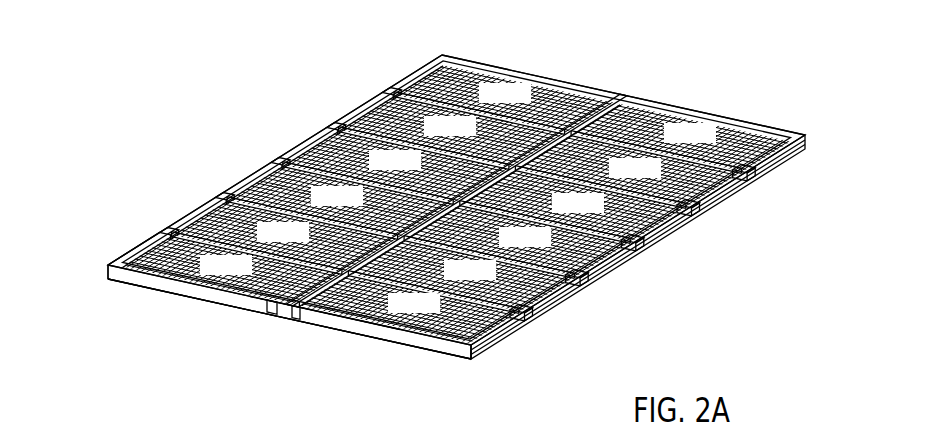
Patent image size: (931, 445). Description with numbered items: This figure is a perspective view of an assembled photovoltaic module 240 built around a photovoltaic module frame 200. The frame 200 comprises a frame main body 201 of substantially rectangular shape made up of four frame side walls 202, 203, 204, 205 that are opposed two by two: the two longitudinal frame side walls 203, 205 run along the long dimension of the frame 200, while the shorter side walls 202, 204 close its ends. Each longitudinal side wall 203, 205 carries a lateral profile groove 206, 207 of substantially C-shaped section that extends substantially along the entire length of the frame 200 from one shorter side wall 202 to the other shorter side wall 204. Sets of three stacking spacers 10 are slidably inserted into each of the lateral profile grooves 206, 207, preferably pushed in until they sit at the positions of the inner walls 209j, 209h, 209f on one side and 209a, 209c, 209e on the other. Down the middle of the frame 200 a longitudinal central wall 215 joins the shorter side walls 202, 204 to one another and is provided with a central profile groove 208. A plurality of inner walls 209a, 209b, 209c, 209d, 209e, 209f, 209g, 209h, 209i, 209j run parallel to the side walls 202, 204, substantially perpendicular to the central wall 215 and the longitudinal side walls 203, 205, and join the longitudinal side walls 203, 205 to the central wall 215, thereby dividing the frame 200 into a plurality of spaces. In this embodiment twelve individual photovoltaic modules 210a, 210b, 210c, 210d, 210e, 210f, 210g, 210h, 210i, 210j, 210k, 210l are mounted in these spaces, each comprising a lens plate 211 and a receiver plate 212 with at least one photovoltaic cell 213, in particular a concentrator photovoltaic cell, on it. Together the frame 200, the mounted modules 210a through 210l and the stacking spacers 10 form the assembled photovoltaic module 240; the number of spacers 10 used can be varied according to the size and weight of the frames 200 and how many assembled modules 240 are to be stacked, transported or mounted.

The photovoltaic module frame 200 is at (716, 66).
The frame main body 201 is at (400, 344).
The frame side wall 202 is at (441, 345).
The longitudinal frame side wall 203 is at (715, 206).
The frame side wall 204 is at (770, 125).
The longitudinal frame side wall 205 is at (190, 208).
The lateral profile groove 206 is at (480, 357).
The lateral profile groove 207 is at (107, 270).
The central profile groove 208 is at (496, 172).
The longitudinal central wall 215 is at (625, 93).
The inner wall 209a is at (178, 230).
The inner wall 209b is at (237, 198).
The inner wall 209c is at (293, 162).
The inner wall 209d is at (345, 127).
The inner wall 209e is at (410, 93).
The inner wall 209f is at (735, 185).
The inner wall 209g is at (680, 222).
The inner wall 209h is at (625, 258).
The inner wall 209i is at (565, 290).
The inner wall 209j is at (500, 325).
The individual photovoltaic module 210a is at (456, 200).
The individual photovoltaic module 210b is at (456, 200).
The individual photovoltaic module 210c is at (456, 200).
The individual photovoltaic module 210d is at (456, 200).
The individual photovoltaic module 210e is at (456, 200).
The individual photovoltaic module 210f is at (456, 200).
The individual photovoltaic module 210g is at (456, 200).
The individual photovoltaic module 210h is at (456, 200).
The individual photovoltaic module 210i is at (456, 200).
The individual photovoltaic module 210j is at (456, 200).
The individual photovoltaic module 210k is at (456, 200).
The individual photovoltaic module 210l is at (456, 200).
The lens plate 211 is at (158, 276).
The receiver plate 212 is at (329, 331).
The photovoltaic cell 213 is at (297, 307).
The stacking spacer 10 is at (383, 90).
The assembled photovoltaic module 240 is at (218, 367).